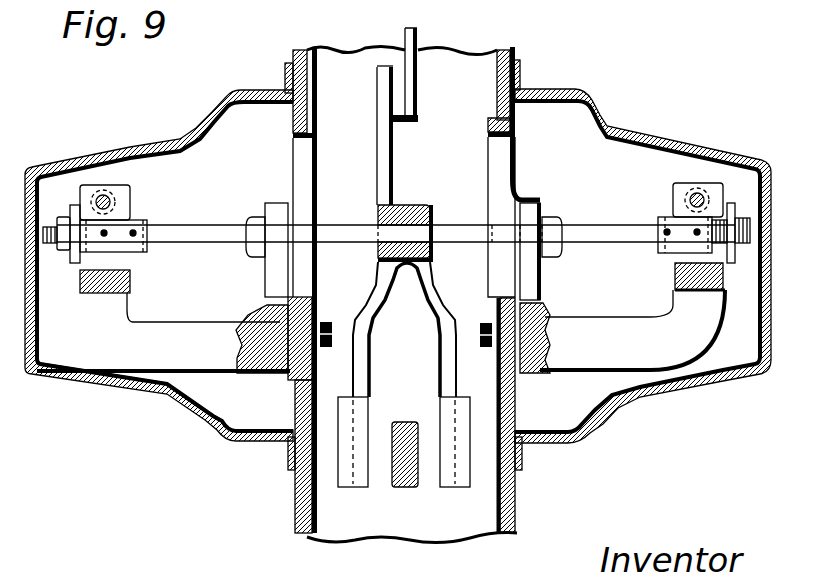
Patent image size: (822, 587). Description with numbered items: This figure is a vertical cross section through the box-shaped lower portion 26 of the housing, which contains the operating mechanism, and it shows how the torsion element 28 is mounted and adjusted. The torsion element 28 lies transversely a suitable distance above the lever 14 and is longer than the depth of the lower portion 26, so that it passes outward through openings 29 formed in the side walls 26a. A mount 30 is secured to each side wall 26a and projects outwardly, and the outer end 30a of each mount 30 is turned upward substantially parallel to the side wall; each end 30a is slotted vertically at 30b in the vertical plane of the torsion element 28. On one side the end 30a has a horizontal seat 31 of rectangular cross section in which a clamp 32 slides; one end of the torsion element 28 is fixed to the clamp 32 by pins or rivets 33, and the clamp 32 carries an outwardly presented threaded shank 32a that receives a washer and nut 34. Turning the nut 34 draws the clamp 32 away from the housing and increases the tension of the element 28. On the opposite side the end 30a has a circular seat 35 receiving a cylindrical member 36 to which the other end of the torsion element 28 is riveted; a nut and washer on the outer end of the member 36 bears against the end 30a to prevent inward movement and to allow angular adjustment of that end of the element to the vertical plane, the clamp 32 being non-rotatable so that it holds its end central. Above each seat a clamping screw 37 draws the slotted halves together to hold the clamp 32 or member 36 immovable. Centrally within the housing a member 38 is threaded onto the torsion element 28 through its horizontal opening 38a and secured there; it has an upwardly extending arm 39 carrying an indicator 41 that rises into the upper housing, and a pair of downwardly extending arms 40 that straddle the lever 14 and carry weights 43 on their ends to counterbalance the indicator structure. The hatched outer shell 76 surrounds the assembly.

The lever 14 is at (407, 487).
The lower portion of housing 26 is at (305, 546).
The side walls 26a is at (295, 512).
The torsion element 28 is at (230, 230).
The openings 29 is at (307, 160).
The mount 30 is at (190, 360).
The outer end of mount 30a is at (105, 325).
The vertical slot 30b is at (80, 295).
The seat 31 is at (80, 267).
The clamp 32 is at (147, 220).
The threaded shank 32a is at (55, 213).
The pins or rivets 33 is at (104, 237).
The washer and nut 34 is at (65, 213).
The seat 35 is at (678, 212).
The cylindrical member 36 is at (662, 245).
The clamping screw 37 is at (107, 197).
The member 38 is at (735, 207).
The horizontally disposed opening 38a is at (410, 222).
The upwardly extending arm 39 is at (382, 112).
The downwardly extending arms 40 is at (443, 353).
The indicator 41 is at (415, 43).
The weights 43 is at (350, 487).
The housing shell 76 is at (613, 130).